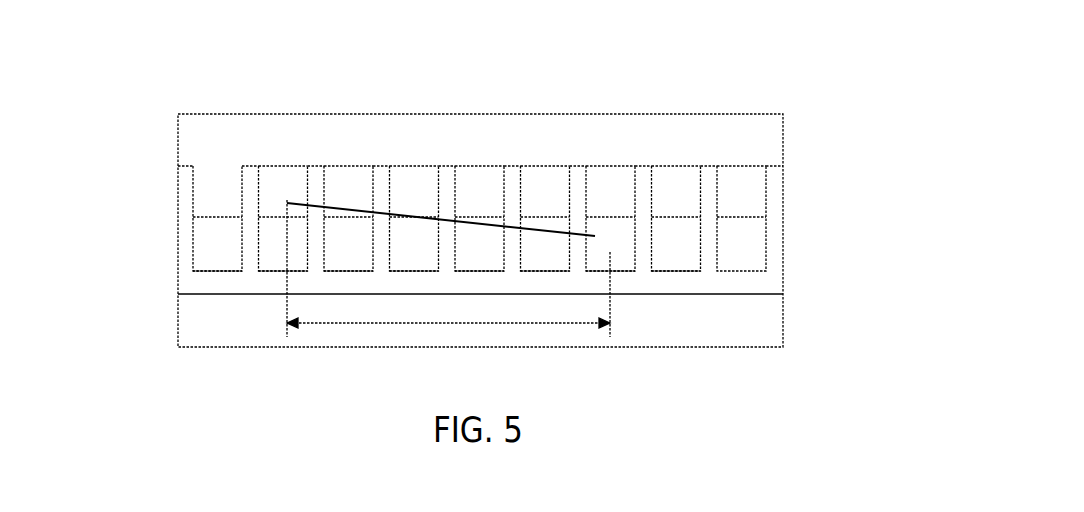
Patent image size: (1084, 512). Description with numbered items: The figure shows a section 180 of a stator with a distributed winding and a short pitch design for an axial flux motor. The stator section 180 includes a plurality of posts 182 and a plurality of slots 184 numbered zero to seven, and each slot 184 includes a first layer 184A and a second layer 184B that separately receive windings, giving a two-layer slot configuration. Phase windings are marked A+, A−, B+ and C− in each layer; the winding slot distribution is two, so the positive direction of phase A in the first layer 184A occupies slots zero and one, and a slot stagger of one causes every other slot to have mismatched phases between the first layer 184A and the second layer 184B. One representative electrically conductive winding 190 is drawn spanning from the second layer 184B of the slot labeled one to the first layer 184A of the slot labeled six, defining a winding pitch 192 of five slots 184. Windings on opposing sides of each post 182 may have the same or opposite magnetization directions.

The stator section 180 is at (179, 68).
The post 182 is at (257, 164).
The slot 184 is at (273, 172).
The first layer 184A is at (767, 247).
The second layer 184B is at (767, 190).
The electrically conductive winding 190 is at (445, 219).
The pitch of the winding 192 is at (490, 324).